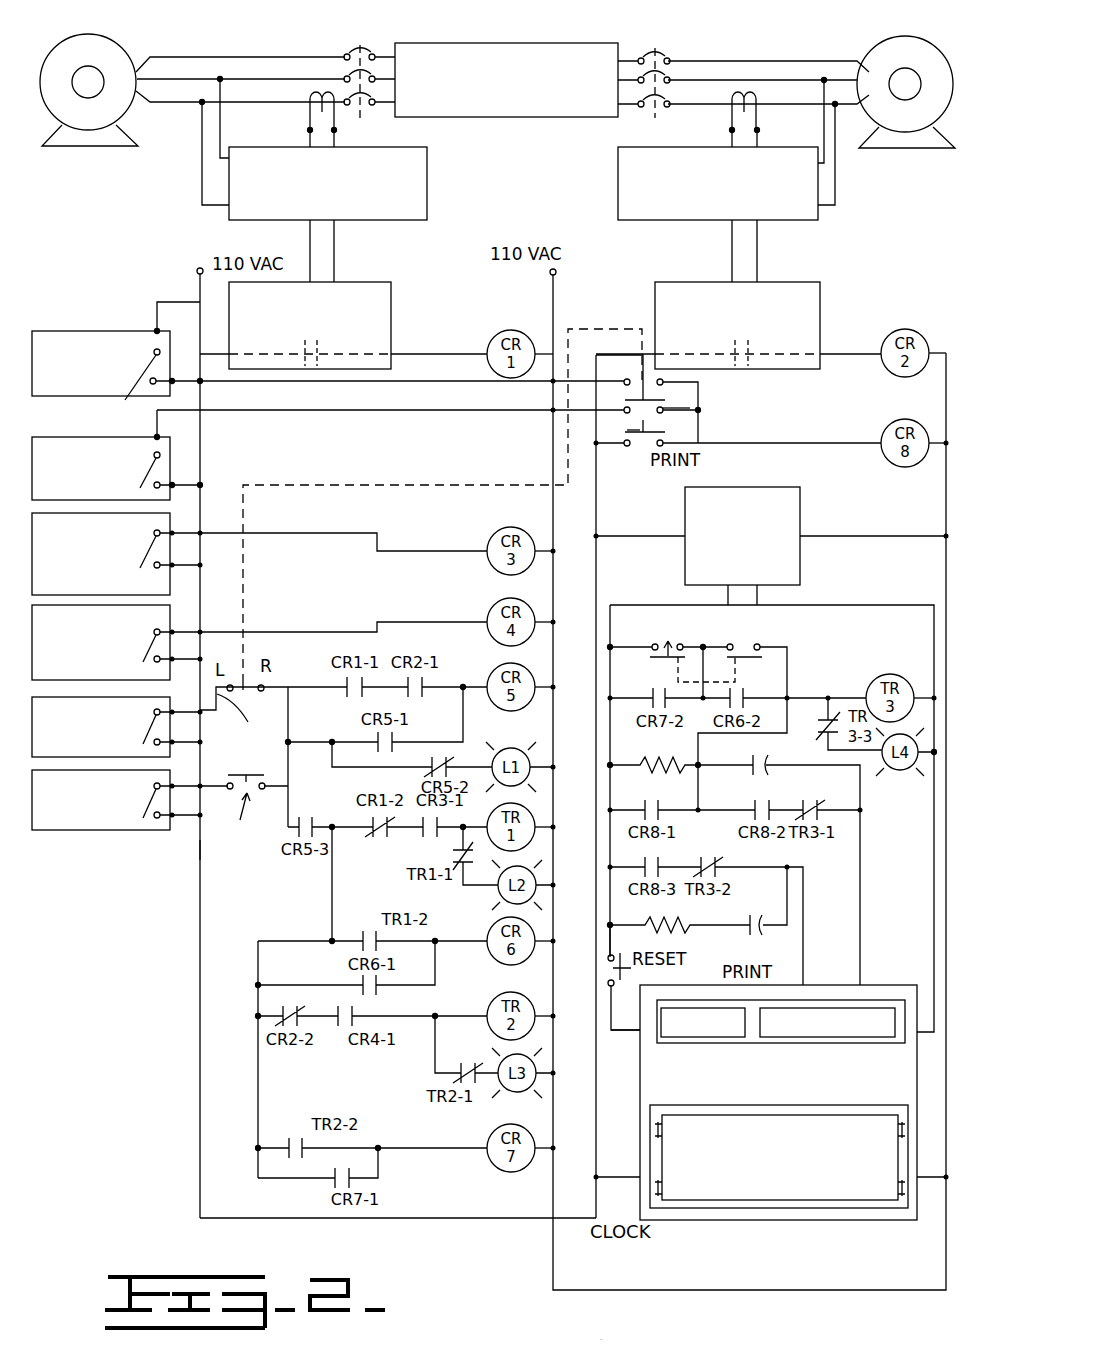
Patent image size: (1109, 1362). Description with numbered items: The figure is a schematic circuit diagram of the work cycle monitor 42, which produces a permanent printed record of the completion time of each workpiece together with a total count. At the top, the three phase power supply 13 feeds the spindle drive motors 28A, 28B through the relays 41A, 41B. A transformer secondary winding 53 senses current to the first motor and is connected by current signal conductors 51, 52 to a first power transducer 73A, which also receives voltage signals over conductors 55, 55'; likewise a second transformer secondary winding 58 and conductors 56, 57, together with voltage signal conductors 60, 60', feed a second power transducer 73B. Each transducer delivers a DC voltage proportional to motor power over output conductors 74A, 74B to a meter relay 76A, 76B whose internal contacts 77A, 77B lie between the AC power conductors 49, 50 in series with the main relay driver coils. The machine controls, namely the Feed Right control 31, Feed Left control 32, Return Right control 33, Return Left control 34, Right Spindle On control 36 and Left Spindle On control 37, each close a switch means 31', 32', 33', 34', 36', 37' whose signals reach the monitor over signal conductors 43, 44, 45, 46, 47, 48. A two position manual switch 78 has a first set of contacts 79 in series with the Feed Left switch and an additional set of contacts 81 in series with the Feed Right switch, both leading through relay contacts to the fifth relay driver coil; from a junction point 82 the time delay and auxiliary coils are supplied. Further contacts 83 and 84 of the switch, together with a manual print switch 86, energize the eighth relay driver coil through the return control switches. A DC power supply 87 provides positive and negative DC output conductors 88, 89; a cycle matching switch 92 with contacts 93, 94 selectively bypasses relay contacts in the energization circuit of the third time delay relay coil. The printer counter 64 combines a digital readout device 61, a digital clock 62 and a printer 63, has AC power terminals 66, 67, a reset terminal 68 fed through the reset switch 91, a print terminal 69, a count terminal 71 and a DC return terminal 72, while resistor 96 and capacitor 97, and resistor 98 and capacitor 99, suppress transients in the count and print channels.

The three phase power supply 13 is at (540, 43).
The spindle drive motor 28A is at (118, 55).
The spindle drive motor 28B is at (880, 55).
The Feed Right control 31 is at (117, 817).
The switch means of Feed Right control 31' is at (145, 827).
The Feed Left control 32 is at (130, 727).
The switch means of Feed Left control 32' is at (188, 745).
The Return Right control 33 is at (116, 344).
The switch means of Return Right control 33' is at (127, 392).
The Return Left control 34 is at (117, 456).
The switch means of Return Left control 34' is at (191, 468).
The Right Spindle On control 36 is at (132, 545).
The switch means of Right Spindle On control 36' is at (189, 550).
The Left Spindle On control 37 is at (132, 637).
The switch means of Left Spindle On control 37' is at (191, 647).
The relay 41A is at (360, 48).
The relay 41B is at (660, 52).
The work cycle monitor 42 is at (153, 930).
The signal conductor 43 is at (200, 842).
The signal conductor 44 is at (375, 383).
The signal conductor 45 is at (375, 538).
The signal conductor 46 is at (246, 714).
The signal conductor 47 is at (333, 412).
The signal conductor 48 is at (375, 622).
The AC power conductor 49 is at (549, 278).
The AC power conductor 50 is at (198, 266).
The current signal conductor 51 is at (334, 130).
The current signal conductor 52 is at (310, 130).
The transformer secondary winding 53 is at (316, 92).
The voltage signal conductor 55 is at (194, 153).
The voltage signal conductor 55' is at (190, 122).
The current signal conductor 56 is at (732, 140).
The current signal conductor 57 is at (757, 140).
The transformer secondary winding 58 is at (740, 95).
The voltage signal conductor 60 is at (848, 163).
The voltage signal conductor 60' is at (846, 132).
The digital readout device 61 is at (735, 1043).
The digital clock 62 is at (835, 1043).
The printer 63 is at (780, 1115).
The printer counter 64 is at (640, 1118).
The AC power terminal 66 is at (749, 1131).
The AC power terminal 67 is at (620, 1177).
The reset terminal 68 is at (640, 1030).
The print terminal 69 is at (803, 985).
The count terminal 71 is at (860, 985).
The DC return terminal 72 is at (749, 1105).
The first power transducer 73A is at (427, 165).
The second power transducer 73B is at (618, 185).
The output conductors 74A is at (310, 258).
The output conductors 74B is at (732, 266).
The meter relay 76A is at (385, 282).
The meter relay 76B is at (700, 282).
The internal contacts 77A is at (305, 366).
The internal contacts 77B is at (748, 362).
The two position manual switch 78 is at (239, 826).
The first set of contacts 79 is at (262, 684).
The additional set of contacts 81 is at (236, 782).
The junction point 82 is at (330, 828).
The set of contacts 83 is at (627, 378).
The set of contacts 84 is at (663, 408).
The manual print switch 86 is at (628, 424).
The DC power supply 87 is at (800, 512).
The positive DC output conductor 88 is at (663, 605).
The negative DC output conductor 89 is at (800, 605).
The reset switch 91 is at (608, 960).
The cycle matching switch 92 is at (740, 682).
The first set of contacts 93 is at (655, 644).
The second set of contacts 94 is at (757, 644).
The resistor 96 is at (660, 763).
The capacitor 97 is at (768, 775).
The resistor 98 is at (690, 925).
The capacitor 99 is at (764, 915).